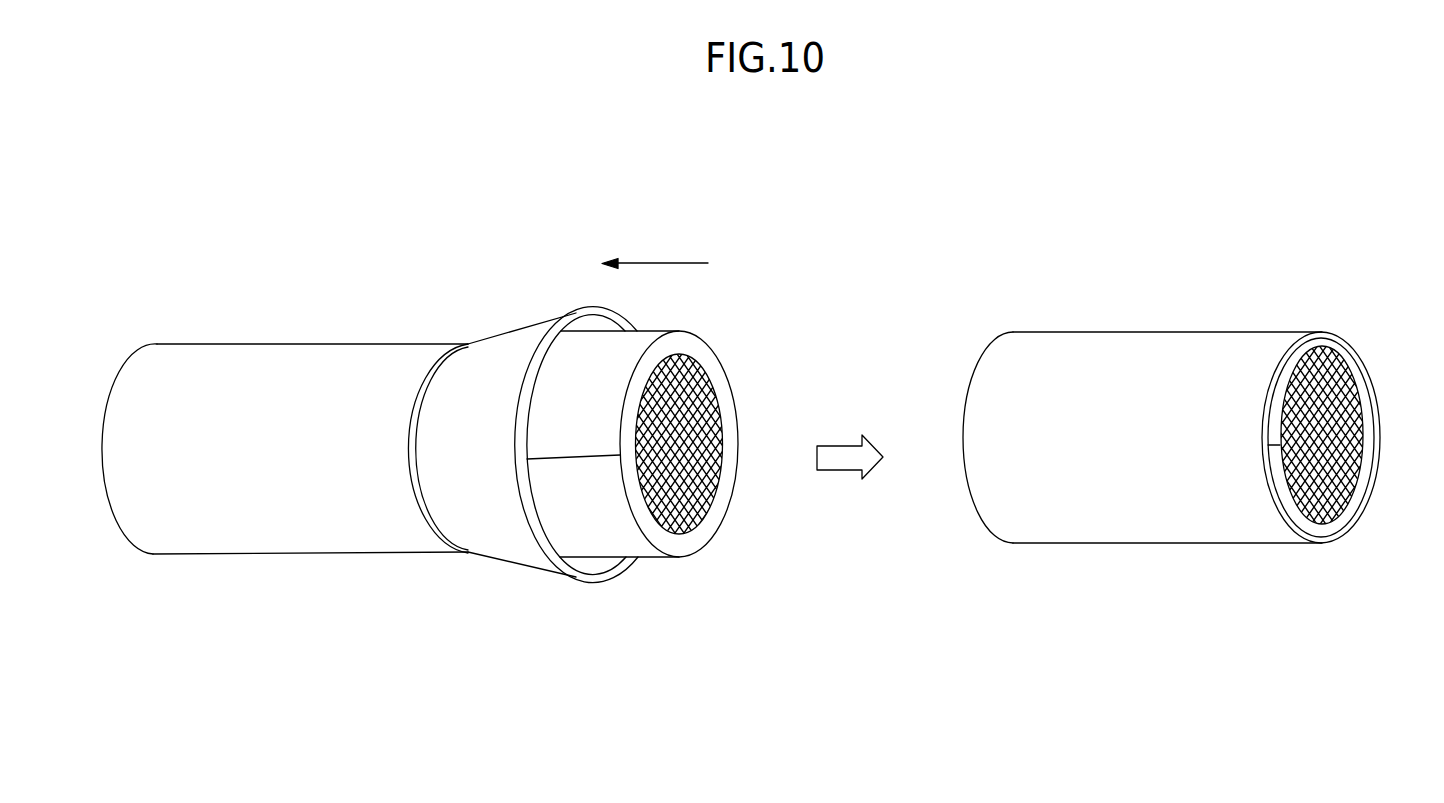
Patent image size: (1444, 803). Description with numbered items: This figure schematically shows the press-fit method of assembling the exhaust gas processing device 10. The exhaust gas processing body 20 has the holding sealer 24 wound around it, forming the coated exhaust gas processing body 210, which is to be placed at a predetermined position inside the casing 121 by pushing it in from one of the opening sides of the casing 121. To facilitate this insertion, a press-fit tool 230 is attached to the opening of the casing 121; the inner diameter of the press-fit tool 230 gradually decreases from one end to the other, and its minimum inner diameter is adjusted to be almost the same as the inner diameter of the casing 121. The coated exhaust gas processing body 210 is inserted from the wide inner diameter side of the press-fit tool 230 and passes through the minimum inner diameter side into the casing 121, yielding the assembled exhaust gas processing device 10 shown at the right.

The exhaust gas processing device 10 is at (1294, 277).
The casing 121 is at (365, 343).
The press-fit tool 230 is at (512, 560).
The holding sealer 24 is at (655, 558).
The coated exhaust gas processing body 210 is at (713, 351).
The exhaust gas processing body 20 is at (697, 458).